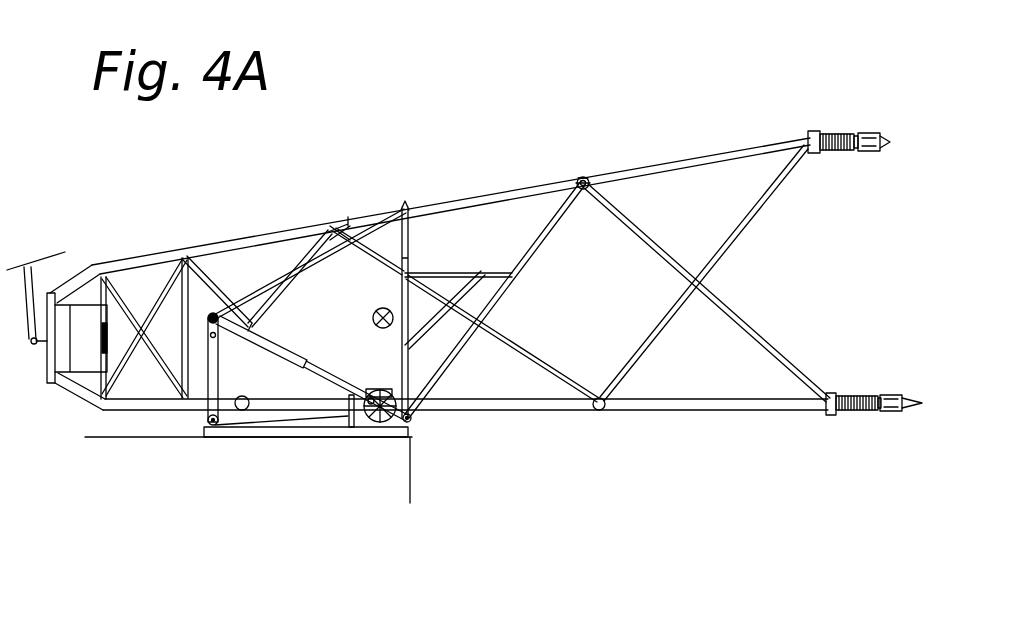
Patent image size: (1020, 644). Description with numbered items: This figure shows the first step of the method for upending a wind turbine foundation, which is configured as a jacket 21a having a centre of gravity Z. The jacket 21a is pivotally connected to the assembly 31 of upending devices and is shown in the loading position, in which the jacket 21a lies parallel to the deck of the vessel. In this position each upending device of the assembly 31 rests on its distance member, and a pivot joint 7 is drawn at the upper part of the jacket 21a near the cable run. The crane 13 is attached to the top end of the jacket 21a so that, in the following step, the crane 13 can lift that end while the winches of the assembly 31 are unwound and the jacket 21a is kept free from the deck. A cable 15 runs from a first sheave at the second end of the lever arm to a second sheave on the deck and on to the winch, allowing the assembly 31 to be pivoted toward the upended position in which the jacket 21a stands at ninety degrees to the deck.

The crane 13 is at (43, 285).
The pivot joint 7 is at (600, 187).
The cable 15 is at (222, 380).
The assembly 31 is at (270, 434).
The jacket 21a is at (709, 412).
The centre of gravity Z is at (374, 312).